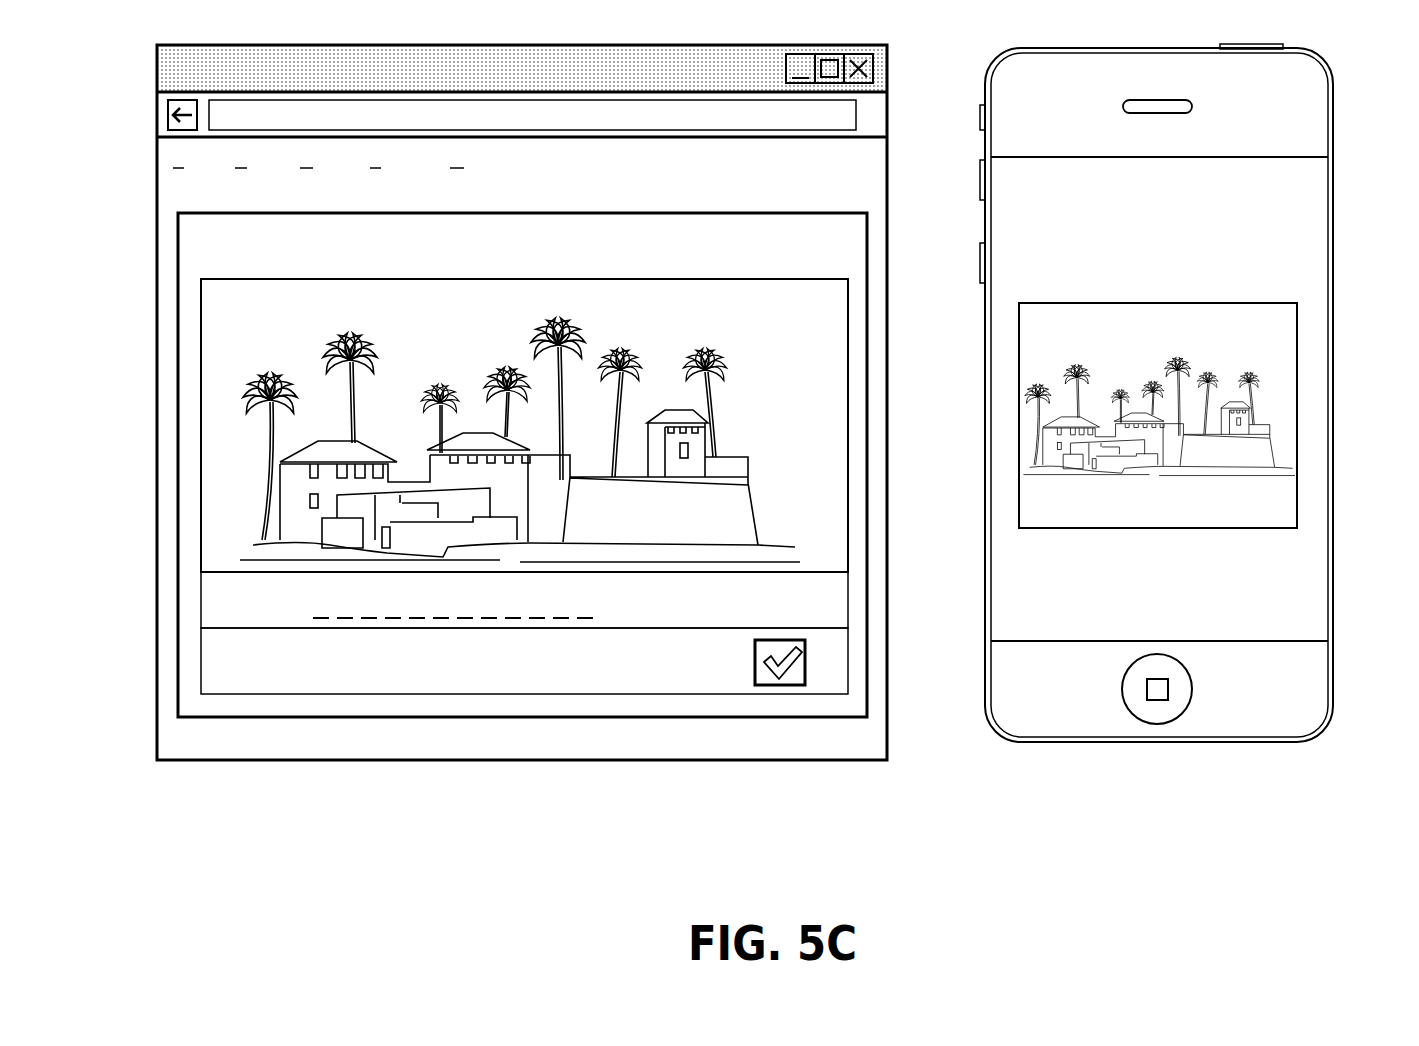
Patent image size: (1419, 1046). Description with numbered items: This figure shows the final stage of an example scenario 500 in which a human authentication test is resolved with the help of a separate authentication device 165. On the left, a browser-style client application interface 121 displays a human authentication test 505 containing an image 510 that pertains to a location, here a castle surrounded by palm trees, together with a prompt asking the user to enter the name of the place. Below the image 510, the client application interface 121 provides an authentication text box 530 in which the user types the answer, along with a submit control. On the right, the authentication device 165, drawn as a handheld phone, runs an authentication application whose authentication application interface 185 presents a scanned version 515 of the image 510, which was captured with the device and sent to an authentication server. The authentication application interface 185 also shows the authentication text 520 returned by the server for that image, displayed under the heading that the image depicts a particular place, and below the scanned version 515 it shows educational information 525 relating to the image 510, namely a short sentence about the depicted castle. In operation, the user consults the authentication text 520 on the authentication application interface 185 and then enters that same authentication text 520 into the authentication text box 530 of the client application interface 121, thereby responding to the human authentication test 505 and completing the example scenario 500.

The client application interface 121 is at (250, 761).
The human authentication test 505 is at (178, 258).
The image 510 is at (210, 468).
The authentication text box 530 is at (235, 603).
The authentication device 165 is at (1028, 745).
The authentication application interface 185 is at (1310, 195).
The authentication text 520 is at (1223, 243).
The scanned version 515 is at (1287, 385).
The educational information 525 is at (1283, 585).
The example scenario 500 is at (1397, 890).